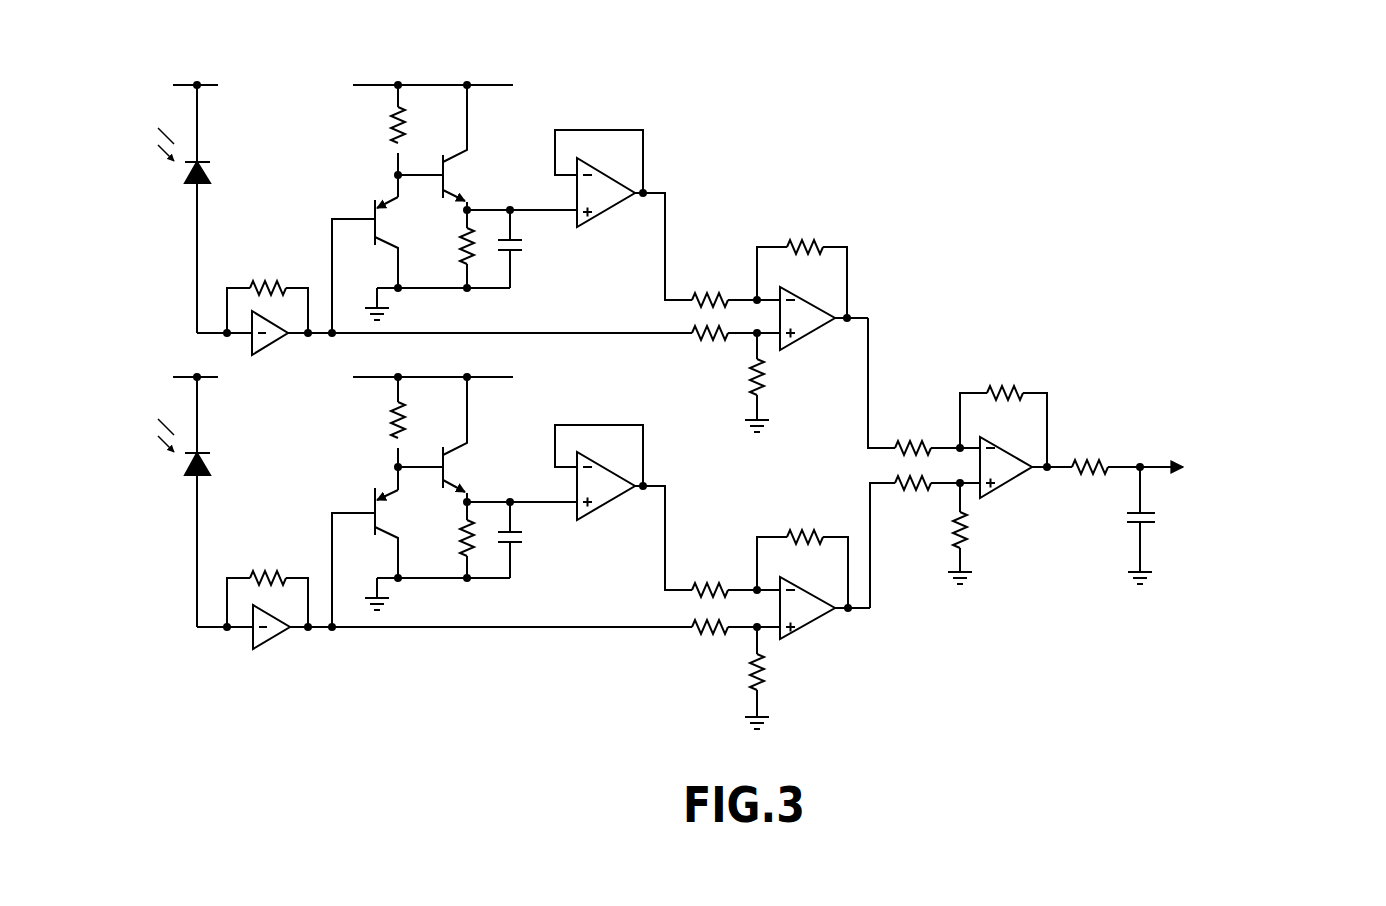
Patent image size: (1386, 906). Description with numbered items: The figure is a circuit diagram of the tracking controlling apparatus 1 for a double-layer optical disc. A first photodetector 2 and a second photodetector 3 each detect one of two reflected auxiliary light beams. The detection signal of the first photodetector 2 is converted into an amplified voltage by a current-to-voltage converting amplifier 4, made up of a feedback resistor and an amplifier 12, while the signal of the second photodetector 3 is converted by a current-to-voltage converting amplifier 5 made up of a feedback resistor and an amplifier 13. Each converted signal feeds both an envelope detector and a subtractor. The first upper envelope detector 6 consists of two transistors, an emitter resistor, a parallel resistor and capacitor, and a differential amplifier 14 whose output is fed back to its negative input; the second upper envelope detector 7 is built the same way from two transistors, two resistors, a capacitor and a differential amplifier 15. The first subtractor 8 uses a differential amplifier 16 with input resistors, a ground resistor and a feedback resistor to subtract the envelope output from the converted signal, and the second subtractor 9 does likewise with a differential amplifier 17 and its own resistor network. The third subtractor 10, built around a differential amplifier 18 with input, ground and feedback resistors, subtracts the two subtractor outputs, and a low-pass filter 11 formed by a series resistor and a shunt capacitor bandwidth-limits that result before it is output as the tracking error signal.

The tracking controlling apparatus 1 is at (887, 203).
The first photodetector 2 is at (210, 170).
The second photodetector 3 is at (210, 462).
The current-to-voltage converting amplifier 4 is at (300, 270).
The current-to-voltage converting amplifier 5 is at (296, 545).
The first upper envelope detector 6 is at (563, 118).
The second upper envelope detector 7 is at (570, 410).
The first subtractor 8 is at (728, 240).
The second subtractor 9 is at (735, 548).
The third subtractor 10 is at (962, 375).
The low-pass filter 11 is at (1137, 425).
The amplifier 12 is at (276, 342).
The amplifier 13 is at (276, 638).
The differential amplifier 14 is at (607, 205).
The differential amplifier 15 is at (607, 495).
The differential amplifier 16 is at (812, 325).
The differential amplifier 17 is at (815, 617).
The differential amplifier 18 is at (1020, 478).